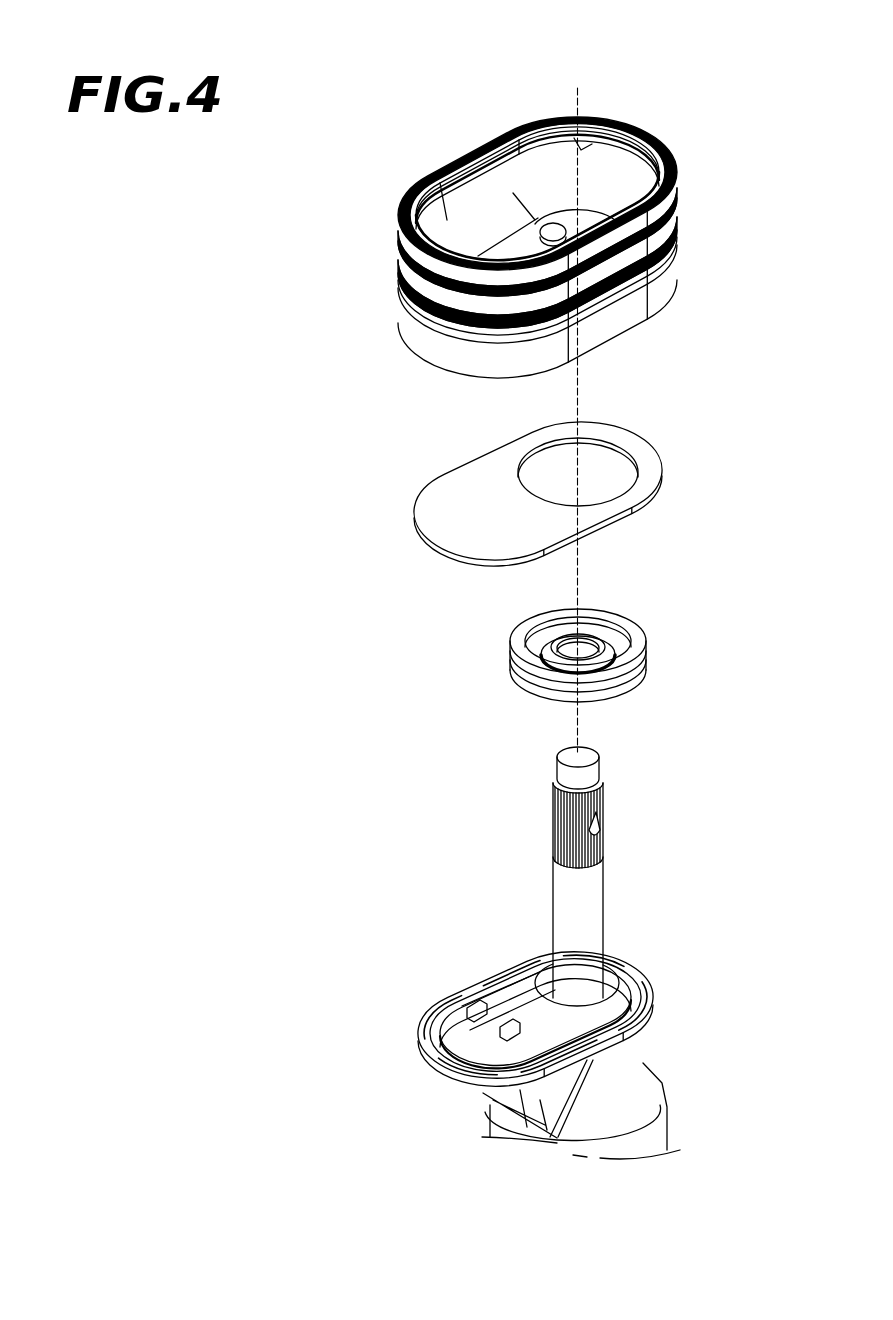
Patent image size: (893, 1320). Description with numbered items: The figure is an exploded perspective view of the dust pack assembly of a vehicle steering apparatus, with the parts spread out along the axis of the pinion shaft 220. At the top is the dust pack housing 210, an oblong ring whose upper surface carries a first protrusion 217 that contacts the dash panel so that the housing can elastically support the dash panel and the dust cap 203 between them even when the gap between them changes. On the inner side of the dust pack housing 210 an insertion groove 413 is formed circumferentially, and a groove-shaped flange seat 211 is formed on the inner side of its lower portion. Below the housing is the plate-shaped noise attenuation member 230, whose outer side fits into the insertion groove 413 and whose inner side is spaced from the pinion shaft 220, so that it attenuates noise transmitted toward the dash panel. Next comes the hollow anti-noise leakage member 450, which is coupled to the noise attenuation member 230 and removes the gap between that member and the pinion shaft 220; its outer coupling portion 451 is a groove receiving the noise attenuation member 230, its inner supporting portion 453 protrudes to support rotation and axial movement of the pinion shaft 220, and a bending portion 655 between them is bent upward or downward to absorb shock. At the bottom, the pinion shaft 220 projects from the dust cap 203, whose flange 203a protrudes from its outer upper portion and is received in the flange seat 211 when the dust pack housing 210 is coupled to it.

The dust pack housing 210 is at (378, 161).
The flange seat 211 is at (415, 339).
The first protrusion 217 is at (668, 151).
The insertion groove 413 is at (590, 147).
The noise attenuation member 230 is at (372, 488).
The anti-noise leakage member 450 is at (490, 645).
The coupling portion 451 is at (648, 639).
The supporting portion 453 is at (601, 645).
The bending portion 655 is at (636, 689).
The pinion shaft 220 is at (587, 915).
The flange 203a is at (652, 1008).
The dust cap 203 is at (643, 1063).